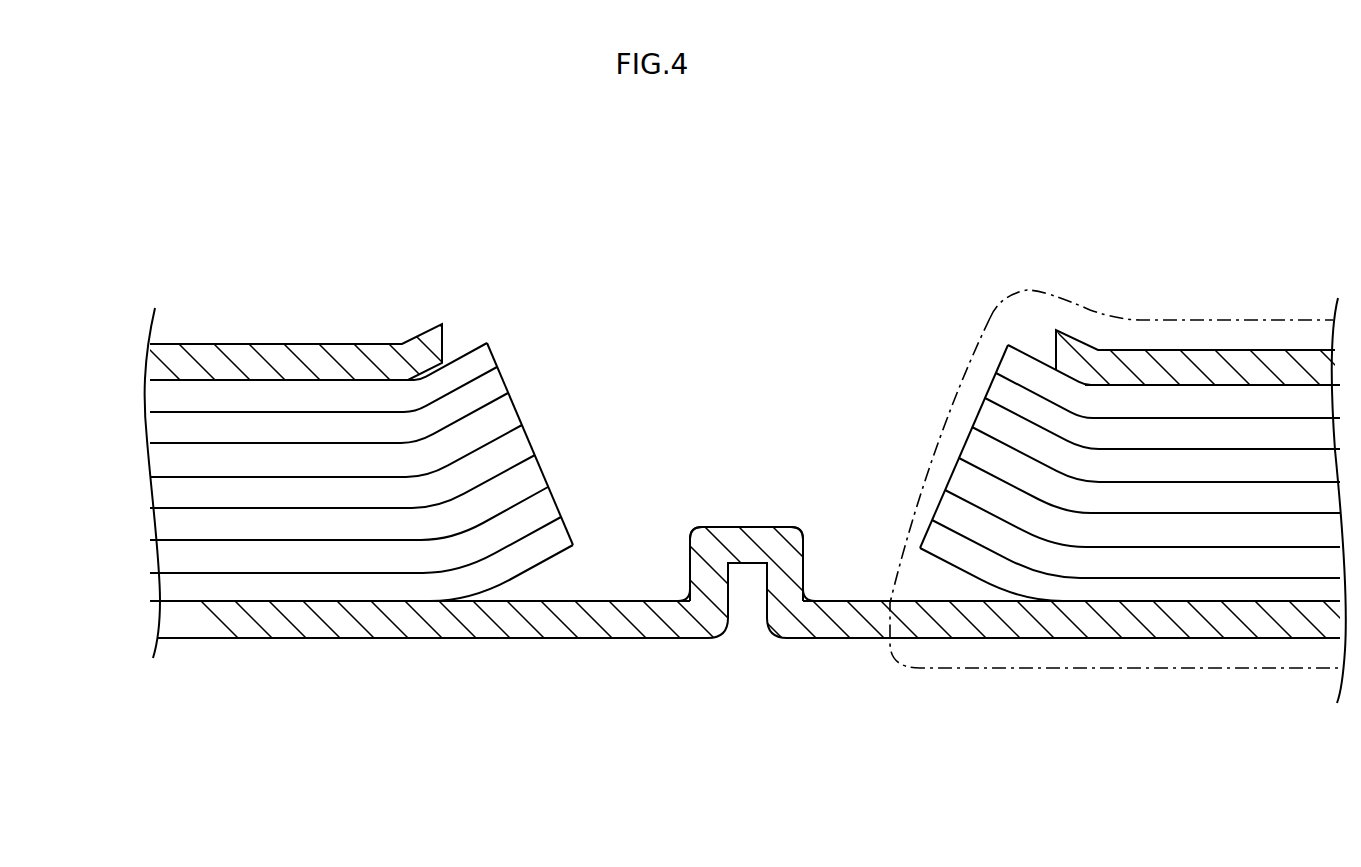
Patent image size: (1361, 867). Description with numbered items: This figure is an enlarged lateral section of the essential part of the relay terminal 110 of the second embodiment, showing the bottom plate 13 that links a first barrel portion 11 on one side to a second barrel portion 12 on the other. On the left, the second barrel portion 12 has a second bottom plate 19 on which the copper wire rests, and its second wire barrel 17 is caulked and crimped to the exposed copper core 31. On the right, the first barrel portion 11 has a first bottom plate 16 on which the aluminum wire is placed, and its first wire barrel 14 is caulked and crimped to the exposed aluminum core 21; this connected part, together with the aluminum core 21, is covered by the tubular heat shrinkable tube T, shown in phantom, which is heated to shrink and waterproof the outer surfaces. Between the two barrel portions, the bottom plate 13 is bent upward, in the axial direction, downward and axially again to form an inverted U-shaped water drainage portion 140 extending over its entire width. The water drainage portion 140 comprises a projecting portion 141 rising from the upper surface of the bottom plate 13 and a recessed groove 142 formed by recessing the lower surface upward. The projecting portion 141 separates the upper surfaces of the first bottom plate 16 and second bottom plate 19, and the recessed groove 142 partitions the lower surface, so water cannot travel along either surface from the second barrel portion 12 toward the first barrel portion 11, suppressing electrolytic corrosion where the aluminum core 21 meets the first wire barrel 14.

The relay terminal 110 is at (772, 258).
The first barrel portion 11 is at (1208, 648).
The second barrel portion 12 is at (283, 642).
The bottom plate 13 is at (825, 632).
The water drainage portion 140 is at (738, 520).
The projecting portion 141 is at (752, 544).
The recessed groove 142 is at (730, 598).
The copper core 31 is at (380, 532).
The second wire barrel 17 is at (287, 362).
The second bottom plate 19 is at (218, 638).
The aluminum core 21 is at (1172, 505).
The first wire barrel 14 is at (1236, 372).
The first bottom plate 16 is at (1303, 633).
The heat shrinkable tube T is at (1064, 298).